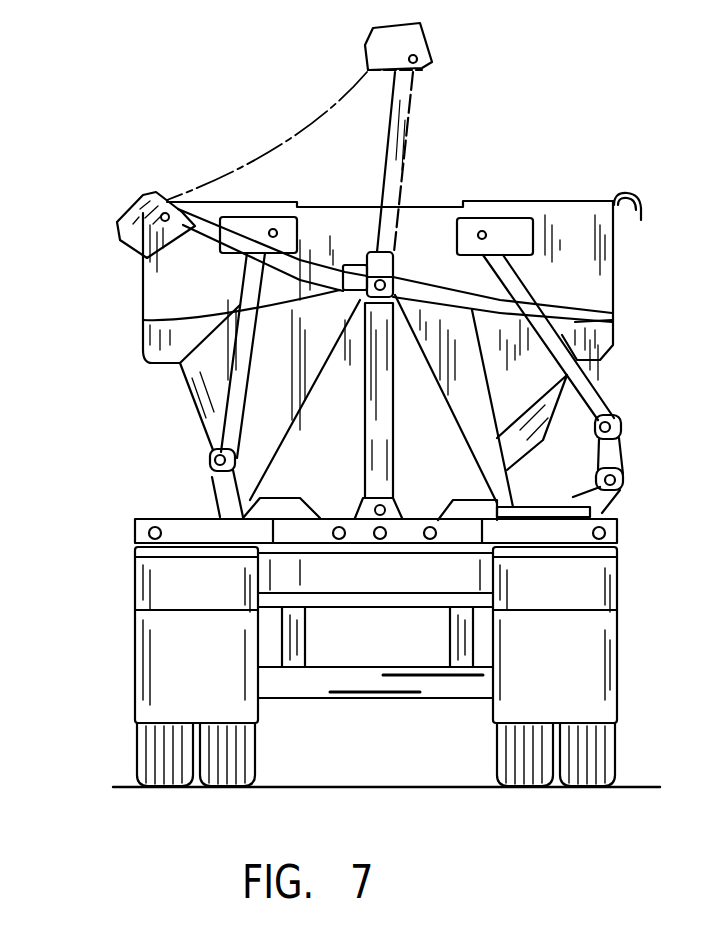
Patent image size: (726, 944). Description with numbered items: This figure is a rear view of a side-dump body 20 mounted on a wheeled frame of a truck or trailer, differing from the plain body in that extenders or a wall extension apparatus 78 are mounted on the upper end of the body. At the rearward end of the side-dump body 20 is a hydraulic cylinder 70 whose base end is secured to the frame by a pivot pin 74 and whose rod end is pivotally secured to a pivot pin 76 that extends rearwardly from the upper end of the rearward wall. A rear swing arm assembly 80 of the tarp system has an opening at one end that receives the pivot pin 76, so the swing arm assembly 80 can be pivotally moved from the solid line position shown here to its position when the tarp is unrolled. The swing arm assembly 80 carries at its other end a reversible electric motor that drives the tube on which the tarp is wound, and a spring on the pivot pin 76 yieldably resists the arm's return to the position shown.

The side-dump body 20 is at (168, 401).
The hydraulic cylinder 70 is at (404, 366).
The pivot pin 74 is at (390, 520).
The pivot pin 76 is at (388, 277).
The extenders or wall extension apparatus 78 is at (462, 183).
The rear swing arm assembly 80 is at (128, 258).